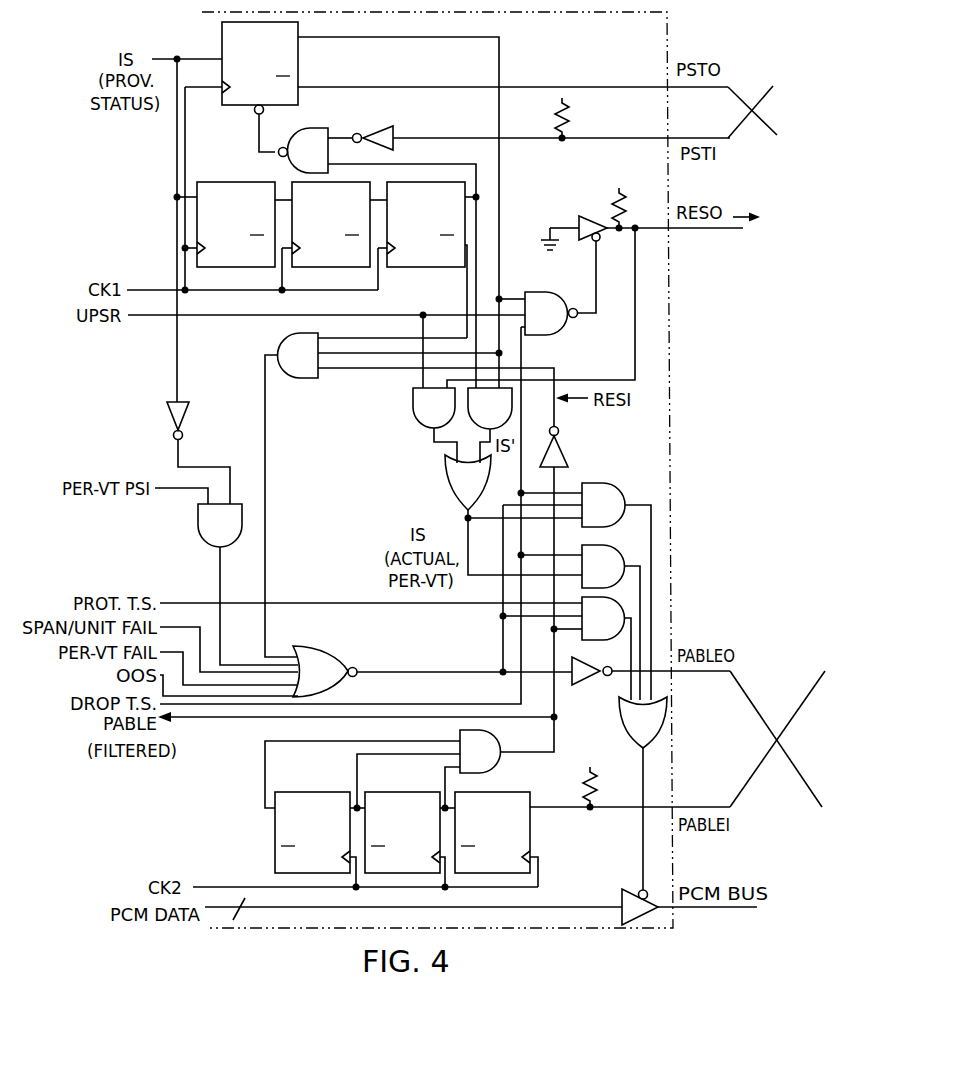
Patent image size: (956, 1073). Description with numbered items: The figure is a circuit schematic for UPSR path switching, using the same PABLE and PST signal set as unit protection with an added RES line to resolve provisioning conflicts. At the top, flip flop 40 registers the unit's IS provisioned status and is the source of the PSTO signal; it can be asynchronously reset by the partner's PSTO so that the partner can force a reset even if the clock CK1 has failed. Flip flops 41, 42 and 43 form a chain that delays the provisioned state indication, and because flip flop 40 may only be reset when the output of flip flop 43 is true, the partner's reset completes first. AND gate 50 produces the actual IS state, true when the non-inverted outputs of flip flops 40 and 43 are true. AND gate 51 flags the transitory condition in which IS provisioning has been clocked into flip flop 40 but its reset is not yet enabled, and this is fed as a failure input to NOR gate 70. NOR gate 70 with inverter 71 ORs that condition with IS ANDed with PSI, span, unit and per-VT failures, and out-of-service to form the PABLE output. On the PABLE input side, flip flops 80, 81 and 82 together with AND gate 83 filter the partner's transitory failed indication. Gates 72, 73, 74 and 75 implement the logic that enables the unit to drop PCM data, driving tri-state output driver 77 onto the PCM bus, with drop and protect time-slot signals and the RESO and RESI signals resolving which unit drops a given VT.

The flip flop 40 is at (272, 71).
The flip flop 41 is at (248, 231).
The flip flop 42 is at (343, 231).
The flip flop 43 is at (438, 231).
The AND gate 50 is at (557, 325).
The AND gate 51 is at (312, 367).
The NOR gate 70 is at (331, 683).
The inverter 71 is at (586, 679).
The gate 72 is at (614, 516).
The gate 73 is at (614, 578).
The gate 74 is at (614, 630).
The gate 75 is at (656, 731).
The tri-state output driver 77 is at (622, 890).
The flip flop 80 is at (515, 848).
The flip flop 81 is at (425, 848).
The flip flop 82 is at (335, 848).
The AND gate 83 is at (490, 763).